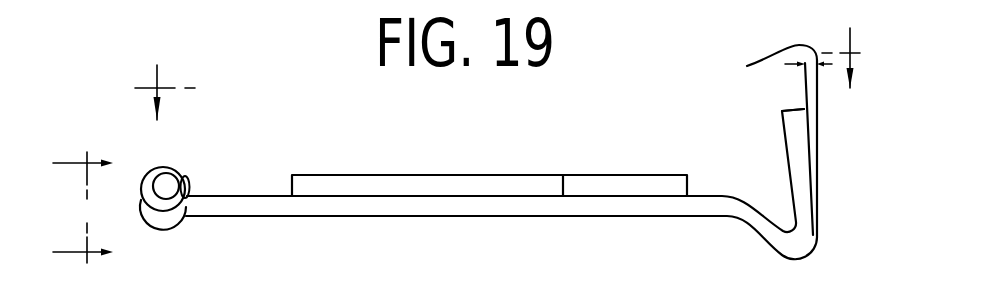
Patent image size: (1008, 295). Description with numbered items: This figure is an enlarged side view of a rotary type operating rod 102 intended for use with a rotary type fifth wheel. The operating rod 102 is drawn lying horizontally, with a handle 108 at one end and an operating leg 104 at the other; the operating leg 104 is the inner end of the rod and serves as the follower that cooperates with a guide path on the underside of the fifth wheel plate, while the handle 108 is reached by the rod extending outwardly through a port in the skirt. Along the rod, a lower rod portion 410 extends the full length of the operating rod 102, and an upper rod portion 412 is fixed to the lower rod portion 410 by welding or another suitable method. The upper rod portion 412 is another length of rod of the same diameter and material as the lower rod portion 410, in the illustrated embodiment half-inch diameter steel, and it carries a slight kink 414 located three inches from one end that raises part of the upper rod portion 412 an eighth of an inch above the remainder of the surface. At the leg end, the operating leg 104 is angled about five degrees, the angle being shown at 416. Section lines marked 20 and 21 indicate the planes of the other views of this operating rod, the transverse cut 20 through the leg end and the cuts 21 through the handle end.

The operating rod 102 is at (296, 205).
The operating leg 104 is at (806, 186).
The handle 108 is at (173, 138).
The lower rod portion 410 is at (418, 207).
The upper rod portion 412 is at (408, 185).
The kink 414 is at (567, 188).
The angle of the operating leg 416 is at (771, 68).
The section line 20 is at (503, 69).
The section line 21 is at (83, 207).